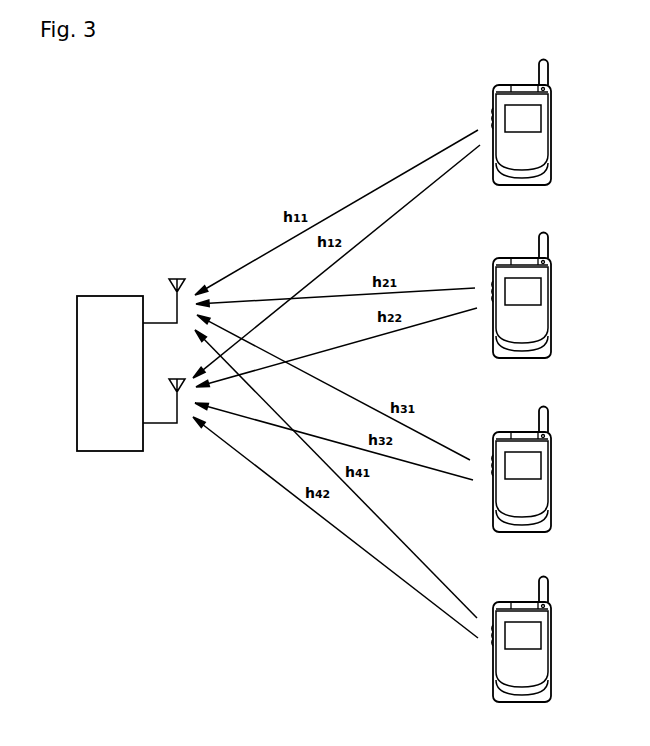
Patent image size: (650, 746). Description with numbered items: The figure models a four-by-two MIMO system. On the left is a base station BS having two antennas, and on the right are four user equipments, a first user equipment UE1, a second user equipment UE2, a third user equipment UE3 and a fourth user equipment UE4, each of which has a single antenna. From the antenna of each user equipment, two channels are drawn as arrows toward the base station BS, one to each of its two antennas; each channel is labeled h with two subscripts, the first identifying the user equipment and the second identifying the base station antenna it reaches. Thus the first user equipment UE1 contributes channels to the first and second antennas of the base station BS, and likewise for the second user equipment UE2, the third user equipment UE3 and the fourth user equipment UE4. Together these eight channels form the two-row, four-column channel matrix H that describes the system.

The base station BS is at (131, 381).
The user equipment UE1 is at (521, 136).
The user equipment UE2 is at (521, 310).
The user equipment UE3 is at (521, 483).
The user equipment UE4 is at (521, 653).